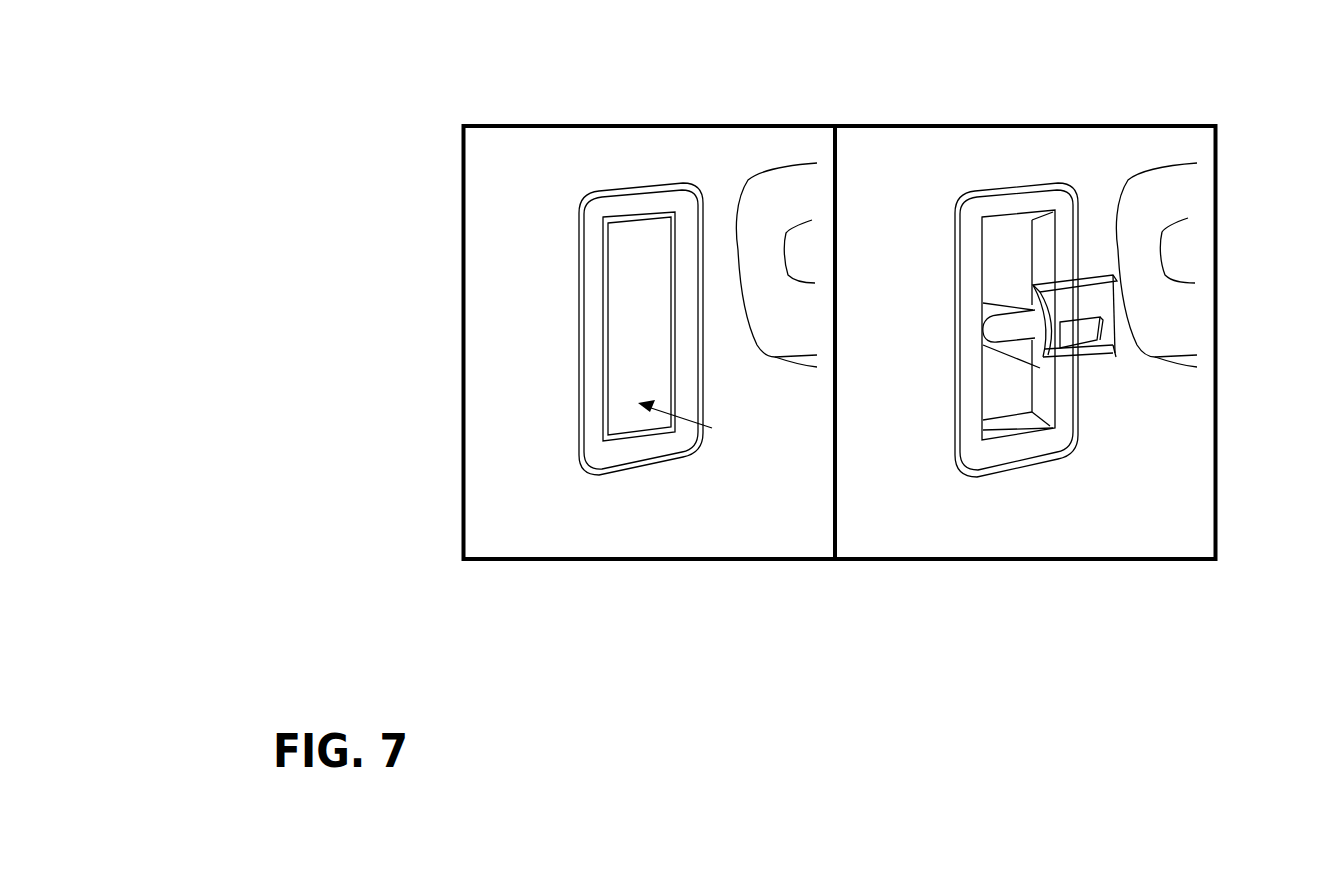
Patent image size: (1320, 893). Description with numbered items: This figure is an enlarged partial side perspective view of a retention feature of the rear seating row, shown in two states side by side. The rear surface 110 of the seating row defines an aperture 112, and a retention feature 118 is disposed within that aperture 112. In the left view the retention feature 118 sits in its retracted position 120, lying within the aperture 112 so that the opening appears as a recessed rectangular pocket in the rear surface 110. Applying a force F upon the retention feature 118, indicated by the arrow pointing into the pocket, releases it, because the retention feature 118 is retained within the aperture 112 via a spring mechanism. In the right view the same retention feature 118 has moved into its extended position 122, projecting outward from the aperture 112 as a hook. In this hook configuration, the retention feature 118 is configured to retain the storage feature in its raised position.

The rear surface 110 is at (535, 266).
The aperture 112 is at (675, 213).
The retention feature 118 is at (607, 358).
The retracted position 120 is at (636, 200).
The extended position 122 is at (968, 232).
The force F is at (697, 418).